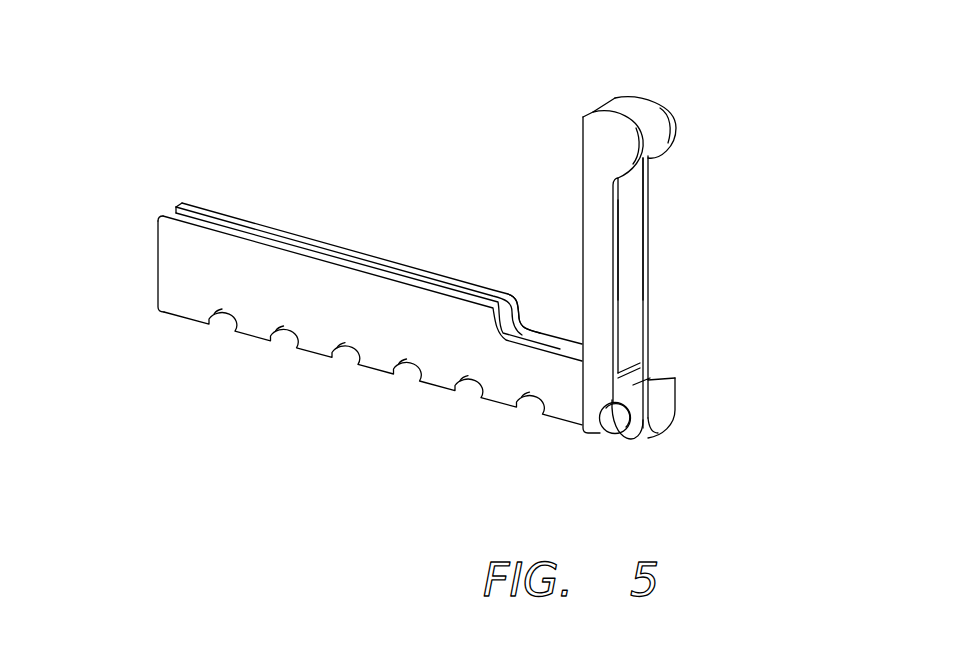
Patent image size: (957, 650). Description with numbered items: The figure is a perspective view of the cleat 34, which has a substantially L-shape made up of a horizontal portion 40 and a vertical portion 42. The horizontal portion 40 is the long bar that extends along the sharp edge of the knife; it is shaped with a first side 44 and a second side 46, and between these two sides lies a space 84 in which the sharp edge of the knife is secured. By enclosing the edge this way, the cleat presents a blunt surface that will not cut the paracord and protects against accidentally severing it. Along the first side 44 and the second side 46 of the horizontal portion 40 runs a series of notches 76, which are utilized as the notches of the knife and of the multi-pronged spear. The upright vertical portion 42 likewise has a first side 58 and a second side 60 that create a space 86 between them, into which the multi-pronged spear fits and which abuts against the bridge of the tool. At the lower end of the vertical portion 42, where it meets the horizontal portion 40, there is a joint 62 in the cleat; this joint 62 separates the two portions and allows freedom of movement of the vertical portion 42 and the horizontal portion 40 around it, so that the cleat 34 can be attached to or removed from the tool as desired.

The cleat 34 is at (752, 448).
The horizontal portion 40 is at (172, 330).
The vertical portion 42 is at (675, 316).
The first side 44 is at (174, 272).
The second side 46 is at (232, 213).
The first side 58 is at (617, 247).
The second side 60 is at (645, 196).
The joint 62 is at (615, 422).
The notches 76 is at (343, 363).
The space 84 is at (513, 297).
The space 86 is at (607, 110).